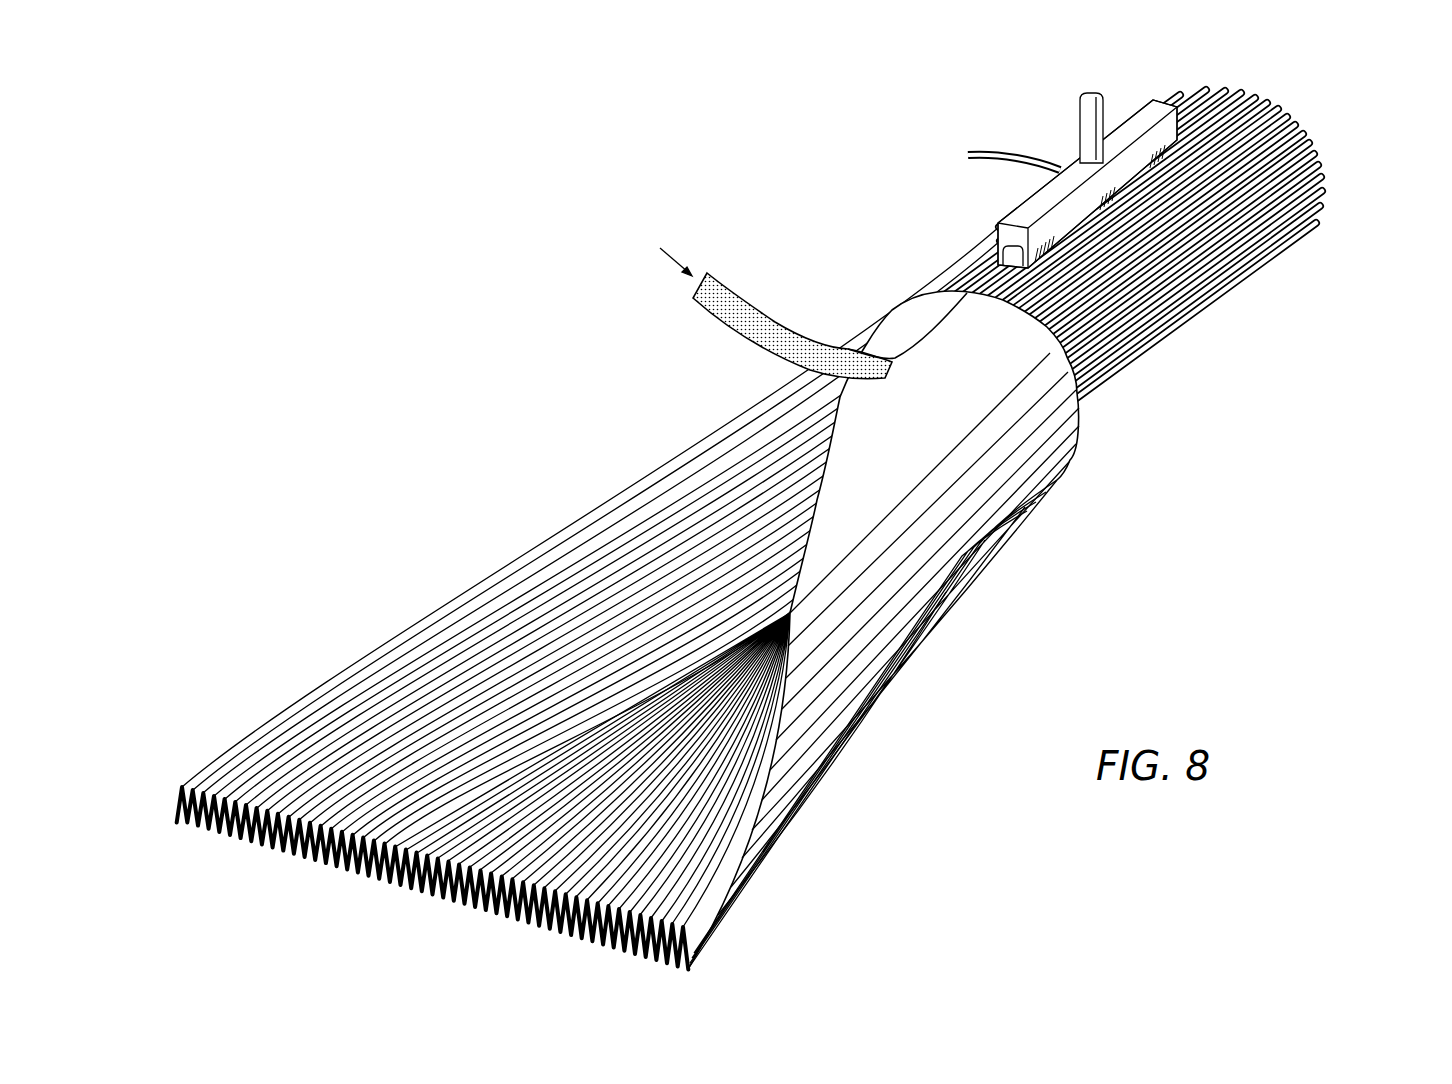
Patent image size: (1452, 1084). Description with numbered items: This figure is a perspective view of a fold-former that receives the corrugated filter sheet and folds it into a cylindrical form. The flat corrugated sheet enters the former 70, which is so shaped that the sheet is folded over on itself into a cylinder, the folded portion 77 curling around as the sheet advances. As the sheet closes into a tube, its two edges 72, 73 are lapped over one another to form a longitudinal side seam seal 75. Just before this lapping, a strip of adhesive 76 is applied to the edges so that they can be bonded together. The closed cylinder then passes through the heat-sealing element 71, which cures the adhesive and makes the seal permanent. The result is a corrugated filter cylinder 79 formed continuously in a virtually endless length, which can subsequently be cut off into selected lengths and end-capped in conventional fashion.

The former 70 is at (277, 702).
The heat-sealing element 71 is at (1023, 214).
The edge 72 is at (1226, 91).
The edge 73 is at (1234, 90).
The longitudinal side seam seal 75 is at (1214, 109).
The strip of adhesive 76 is at (750, 311).
The rolled portion 77 is at (866, 769).
The cylinder 79 is at (1328, 213).